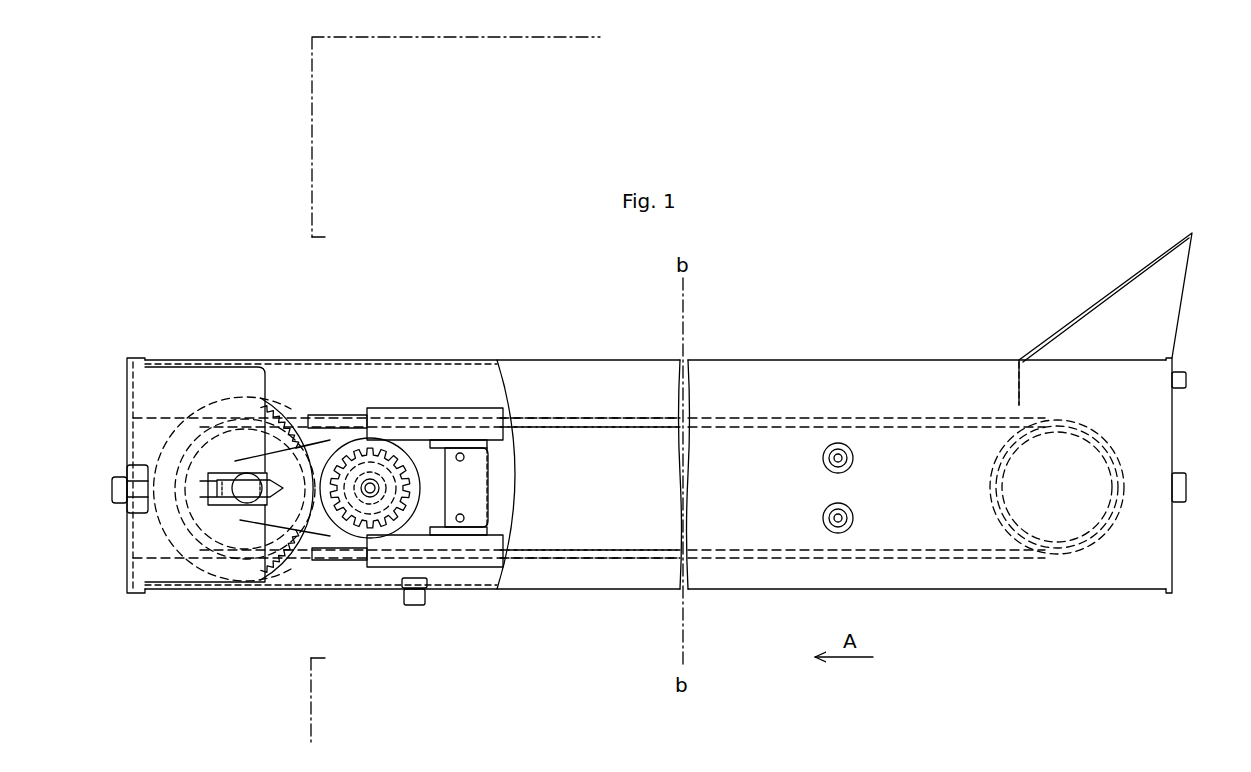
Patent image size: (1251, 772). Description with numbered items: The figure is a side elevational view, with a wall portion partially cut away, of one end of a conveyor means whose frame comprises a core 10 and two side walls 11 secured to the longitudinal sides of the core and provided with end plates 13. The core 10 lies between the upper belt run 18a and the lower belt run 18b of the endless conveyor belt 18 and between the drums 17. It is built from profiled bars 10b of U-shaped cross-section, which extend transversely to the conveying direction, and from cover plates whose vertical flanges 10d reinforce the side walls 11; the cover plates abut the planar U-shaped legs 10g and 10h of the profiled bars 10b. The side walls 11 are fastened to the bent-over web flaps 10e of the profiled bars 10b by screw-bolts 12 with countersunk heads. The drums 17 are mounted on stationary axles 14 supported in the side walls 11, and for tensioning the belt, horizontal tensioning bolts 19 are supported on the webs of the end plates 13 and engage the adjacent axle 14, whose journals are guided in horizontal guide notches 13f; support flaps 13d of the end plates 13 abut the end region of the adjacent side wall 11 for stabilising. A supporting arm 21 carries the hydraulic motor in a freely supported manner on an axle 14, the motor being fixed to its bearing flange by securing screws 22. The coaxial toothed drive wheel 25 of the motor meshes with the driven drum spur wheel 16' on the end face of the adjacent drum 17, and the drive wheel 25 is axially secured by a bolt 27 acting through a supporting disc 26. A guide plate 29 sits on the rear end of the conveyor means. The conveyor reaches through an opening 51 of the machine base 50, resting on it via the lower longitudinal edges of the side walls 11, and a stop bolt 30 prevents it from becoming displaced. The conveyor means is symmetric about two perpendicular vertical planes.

The core 10 is at (443, 484).
The profiled bars 10b is at (493, 482).
The vertical flanges 10d is at (465, 547).
The web flaps 10e is at (473, 510).
The U-shaped leg 10g is at (467, 442).
The U-shaped leg 10h is at (455, 536).
The side walls 11 is at (549, 357).
The screw-bolts 12 is at (850, 512).
The end plates 13 is at (125, 387).
The support flaps 13d is at (127, 470).
The guide notches 13f is at (236, 508).
The axles 14 is at (242, 507).
The drum spur wheel 16' is at (287, 526).
The drums 17 is at (200, 535).
The conveyor belt 18 is at (735, 415).
The upper belt run 18a is at (620, 422).
The lower belt run 18b is at (607, 552).
The tensioning bolts 19 is at (120, 493).
The supporting arm 21 is at (322, 528).
The securing screws 22 is at (408, 468).
The toothed drive wheel 25 is at (392, 516).
The supporting disc 26 is at (357, 473).
The bolt 27 is at (372, 477).
The guide plate 29 is at (1068, 312).
The stop bolt 30 is at (412, 600).
The machine base 50 is at (443, 37).
The opening 51 is at (325, 237).